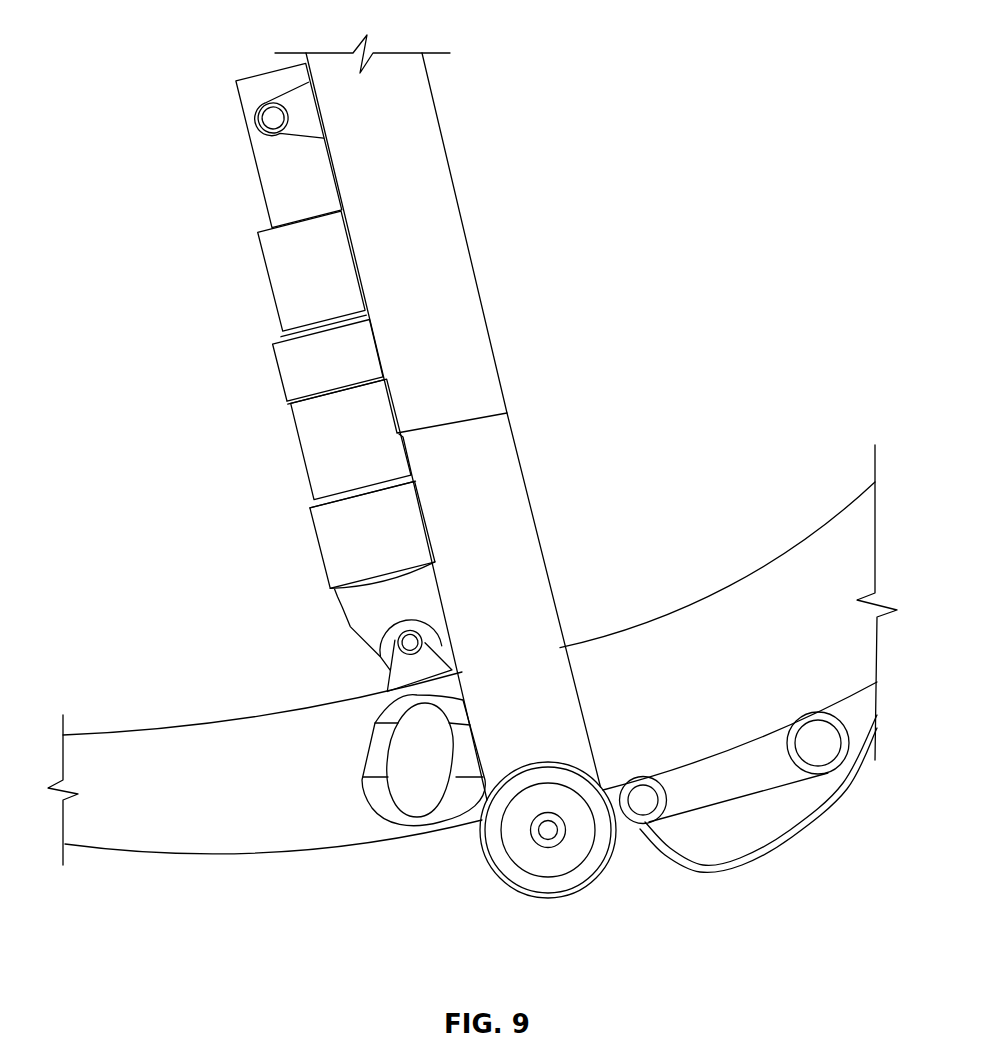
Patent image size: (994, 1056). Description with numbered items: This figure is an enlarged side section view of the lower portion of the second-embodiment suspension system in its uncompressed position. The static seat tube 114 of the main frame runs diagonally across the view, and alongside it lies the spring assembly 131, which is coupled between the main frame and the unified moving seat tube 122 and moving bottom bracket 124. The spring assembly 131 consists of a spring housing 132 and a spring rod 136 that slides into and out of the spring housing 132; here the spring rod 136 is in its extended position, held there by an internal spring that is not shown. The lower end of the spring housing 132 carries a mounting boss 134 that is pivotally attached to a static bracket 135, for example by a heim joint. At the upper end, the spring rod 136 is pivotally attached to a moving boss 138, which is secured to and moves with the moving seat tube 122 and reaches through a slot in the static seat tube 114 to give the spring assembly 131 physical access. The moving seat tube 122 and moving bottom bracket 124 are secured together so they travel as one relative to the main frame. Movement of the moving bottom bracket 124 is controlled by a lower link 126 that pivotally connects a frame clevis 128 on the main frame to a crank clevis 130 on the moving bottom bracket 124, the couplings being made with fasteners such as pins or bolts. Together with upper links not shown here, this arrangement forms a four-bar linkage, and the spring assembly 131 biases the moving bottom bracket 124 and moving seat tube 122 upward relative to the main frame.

The static seat tube 114 is at (414, 181).
The moving seat tube 122 is at (618, 526).
The moving bottom bracket 124 is at (505, 878).
The lower link 126 is at (762, 758).
The frame clevis 128 is at (728, 833).
The crank clevis 130 is at (613, 788).
The spring assembly 131 is at (200, 348).
The spring housing 132 is at (358, 451).
The mounting boss 134 is at (360, 612).
The static bracket 135 is at (407, 668).
The spring rod 136 is at (275, 173).
The moving boss 138 is at (297, 98).